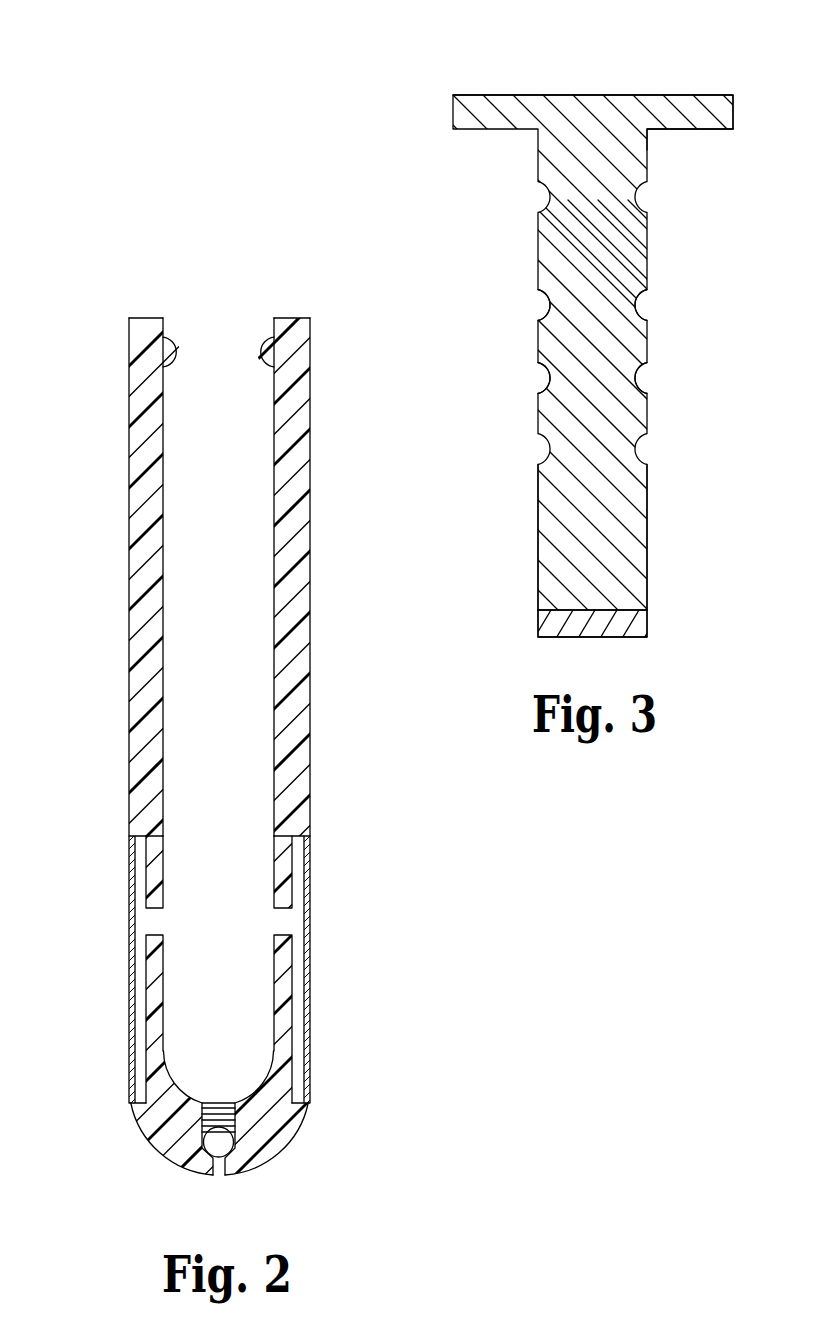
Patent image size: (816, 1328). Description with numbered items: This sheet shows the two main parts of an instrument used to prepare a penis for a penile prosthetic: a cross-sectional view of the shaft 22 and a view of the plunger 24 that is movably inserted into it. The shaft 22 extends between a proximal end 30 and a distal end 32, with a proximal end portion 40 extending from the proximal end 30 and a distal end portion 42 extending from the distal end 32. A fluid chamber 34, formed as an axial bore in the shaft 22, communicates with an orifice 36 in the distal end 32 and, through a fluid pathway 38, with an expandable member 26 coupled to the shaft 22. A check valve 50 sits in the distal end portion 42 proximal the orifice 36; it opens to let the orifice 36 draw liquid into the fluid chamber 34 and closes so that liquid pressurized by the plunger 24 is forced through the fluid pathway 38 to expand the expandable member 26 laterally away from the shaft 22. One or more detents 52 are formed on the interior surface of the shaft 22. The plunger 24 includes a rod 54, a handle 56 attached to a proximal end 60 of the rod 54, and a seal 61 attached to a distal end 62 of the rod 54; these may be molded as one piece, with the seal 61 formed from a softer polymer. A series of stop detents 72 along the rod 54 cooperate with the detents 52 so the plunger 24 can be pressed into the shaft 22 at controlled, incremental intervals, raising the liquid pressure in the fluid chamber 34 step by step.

In FIG. 2, the shaft 22 is at (84, 321).
In FIG. 3, the plunger 24 is at (412, 84).
In FIG. 2, the expandable member 26 is at (129, 1056).
In FIG. 2, the proximal end 30 is at (156, 318).
In FIG. 2, the distal end 32 is at (229, 1174).
In FIG. 2, the fluid chamber 34 is at (199, 850).
In FIG. 2, the orifice 36 is at (218, 1174).
In FIG. 2, the fluid pathway 38 is at (283, 918).
In FIG. 2, the proximal end portion 40 is at (111, 320).
In FIG. 2, the distal end portion 42 is at (69, 1174).
In FIG. 2, the check valve 50 is at (214, 1144).
In FIG. 2, the detents 52 is at (182, 343).
In FIG. 3, the rod 54 is at (560, 548).
In FIG. 3, the handle 56 is at (485, 101).
In FIG. 3, the proximal end of the rod 60 is at (651, 133).
In FIG. 3, the seal 61 is at (543, 622).
In FIG. 3, the distal end of the rod 62 is at (649, 610).
In FIG. 3, the stop detents 72 is at (647, 370).